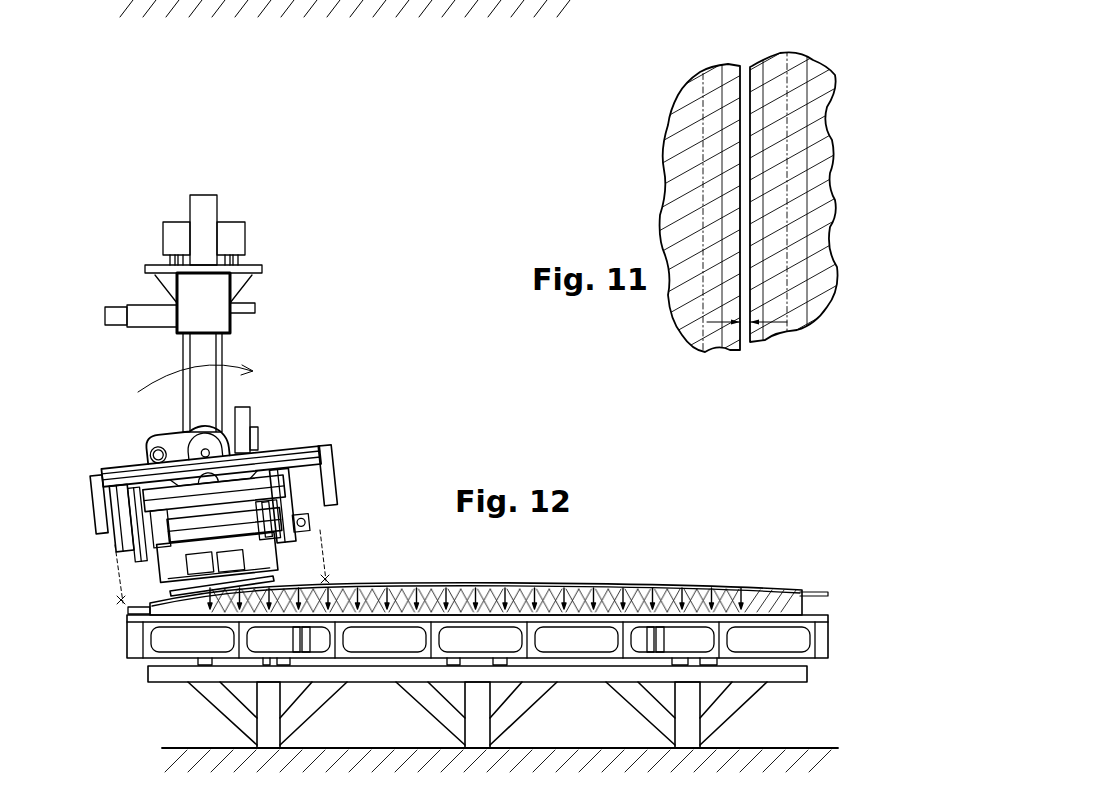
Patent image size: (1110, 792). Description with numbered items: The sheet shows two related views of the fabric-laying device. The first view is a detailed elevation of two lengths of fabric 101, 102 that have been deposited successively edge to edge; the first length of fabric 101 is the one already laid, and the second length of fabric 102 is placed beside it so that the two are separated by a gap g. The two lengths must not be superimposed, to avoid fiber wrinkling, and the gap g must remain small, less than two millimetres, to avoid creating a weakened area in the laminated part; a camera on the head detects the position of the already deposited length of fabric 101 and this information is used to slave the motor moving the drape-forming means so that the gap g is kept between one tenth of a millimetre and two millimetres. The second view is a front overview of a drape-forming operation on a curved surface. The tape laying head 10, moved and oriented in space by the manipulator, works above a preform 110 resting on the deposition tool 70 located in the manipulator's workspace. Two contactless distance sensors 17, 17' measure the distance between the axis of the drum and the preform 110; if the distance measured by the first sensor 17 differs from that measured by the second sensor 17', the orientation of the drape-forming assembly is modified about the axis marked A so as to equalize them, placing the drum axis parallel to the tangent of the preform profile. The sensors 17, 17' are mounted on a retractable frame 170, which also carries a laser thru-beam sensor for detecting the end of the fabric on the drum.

In FIG. 12, the tape laying head 10 is at (291, 324).
In FIG. 12, the first contactless distance sensor 17 is at (242, 504).
In FIG. 12, the second contactless distance sensor 17' is at (104, 547).
In FIG. 12, the retractable frame 170 is at (93, 507).
In FIG. 12, the preform 110 is at (673, 588).
In FIG. 12, the deposition tool 70 is at (792, 640).
In FIG. 11, the first length of fabric 101 is at (708, 338).
In FIG. 11, the second length of fabric 102 is at (815, 267).
In FIG. 11, the gap g is at (778, 327).